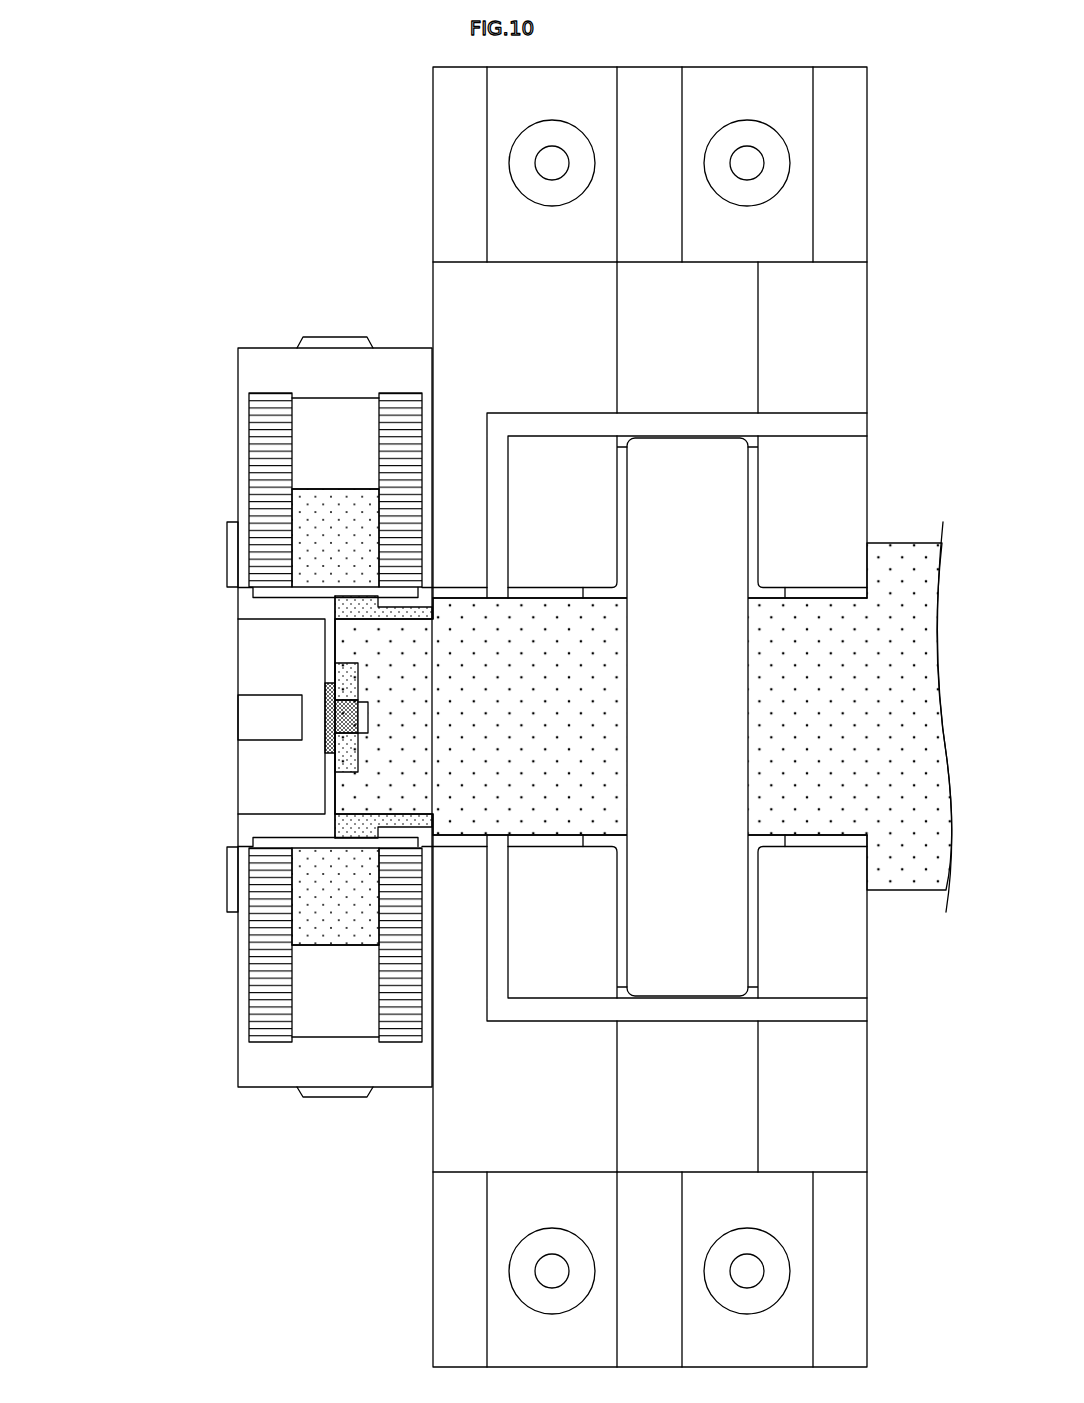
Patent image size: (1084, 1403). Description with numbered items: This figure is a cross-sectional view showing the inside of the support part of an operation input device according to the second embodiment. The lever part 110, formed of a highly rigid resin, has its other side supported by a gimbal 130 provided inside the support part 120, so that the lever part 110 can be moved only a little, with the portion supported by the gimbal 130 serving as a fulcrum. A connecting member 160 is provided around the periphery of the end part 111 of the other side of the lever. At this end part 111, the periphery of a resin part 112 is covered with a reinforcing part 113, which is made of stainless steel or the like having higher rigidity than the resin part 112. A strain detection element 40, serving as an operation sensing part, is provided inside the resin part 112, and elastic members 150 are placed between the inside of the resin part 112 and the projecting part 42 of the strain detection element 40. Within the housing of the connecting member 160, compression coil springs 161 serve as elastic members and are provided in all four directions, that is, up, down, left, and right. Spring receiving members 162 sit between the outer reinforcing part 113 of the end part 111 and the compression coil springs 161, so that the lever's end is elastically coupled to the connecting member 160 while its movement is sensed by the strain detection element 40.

The lever part 110 is at (905, 889).
The end part 111 is at (245, 213).
The resin part 112 is at (403, 660).
The reinforcing part 113 is at (407, 607).
The support part 120 is at (843, 333).
The gimbal 130 is at (815, 519).
The elastic members 150 is at (345, 687).
The connecting member 160 is at (258, 372).
The compression coil springs 161 is at (273, 458).
The spring receiving members 162 is at (327, 530).
The projecting part 42 is at (345, 715).
The strain detection element 40 is at (207, 718).